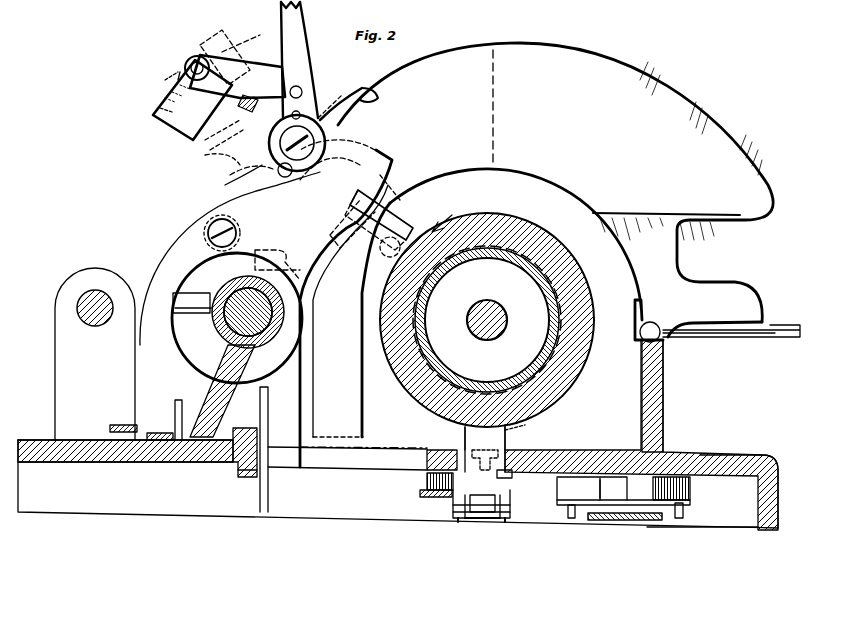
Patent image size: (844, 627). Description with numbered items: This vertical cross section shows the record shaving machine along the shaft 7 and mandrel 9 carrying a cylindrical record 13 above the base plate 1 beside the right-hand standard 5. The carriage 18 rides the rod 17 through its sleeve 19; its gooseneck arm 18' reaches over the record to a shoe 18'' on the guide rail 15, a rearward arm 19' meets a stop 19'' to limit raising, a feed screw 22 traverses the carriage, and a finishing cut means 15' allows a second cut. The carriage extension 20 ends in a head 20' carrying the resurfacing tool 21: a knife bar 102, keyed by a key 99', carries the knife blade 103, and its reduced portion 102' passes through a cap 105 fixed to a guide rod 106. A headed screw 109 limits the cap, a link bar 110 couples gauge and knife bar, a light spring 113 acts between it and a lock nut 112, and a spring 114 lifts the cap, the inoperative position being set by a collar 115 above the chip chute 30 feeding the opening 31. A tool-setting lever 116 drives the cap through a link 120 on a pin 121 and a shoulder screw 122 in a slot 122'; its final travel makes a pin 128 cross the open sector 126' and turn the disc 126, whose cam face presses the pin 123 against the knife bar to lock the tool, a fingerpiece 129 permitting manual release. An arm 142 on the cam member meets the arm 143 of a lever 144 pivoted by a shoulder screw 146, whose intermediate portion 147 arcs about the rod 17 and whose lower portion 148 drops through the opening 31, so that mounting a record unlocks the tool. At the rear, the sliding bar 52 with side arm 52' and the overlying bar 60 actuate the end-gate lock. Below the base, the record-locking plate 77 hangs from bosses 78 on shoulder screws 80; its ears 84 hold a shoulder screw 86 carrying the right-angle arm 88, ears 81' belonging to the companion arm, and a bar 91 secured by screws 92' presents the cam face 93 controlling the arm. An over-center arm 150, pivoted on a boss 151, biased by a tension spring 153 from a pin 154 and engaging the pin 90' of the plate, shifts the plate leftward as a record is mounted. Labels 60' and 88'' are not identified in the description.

The base plate 1 is at (153, 503).
The right-hand standard 5 is at (66, 383).
The shaft 7 is at (508, 322).
The mandrel 9 is at (520, 271).
The cylindrical record 13 is at (510, 212).
The guide rail 15 is at (688, 387).
The finishing cut means 15' is at (731, 316).
The rod 17 is at (270, 312).
The carriage 18 is at (488, 300).
The gooseneck arm 18' is at (555, 181).
The shoe 18'' is at (734, 308).
The sleeve 19 is at (276, 312).
The rearwardly and downwardly extending arm 19' is at (232, 476).
The stop 19'' is at (265, 447).
The forward extension 20 is at (280, 308).
The head 20' is at (205, 161).
The resurfacing tool 21 is at (451, 213).
The feed screw 22 is at (100, 290).
The chip chute 30 is at (418, 228).
The opening 31 is at (430, 452).
The bar 52 is at (167, 459).
The side arm 52' is at (162, 415).
The bar 60 is at (127, 411).
The stop lever 60' is at (177, 365).
The plate 77 is at (430, 490).
The bosses 78 is at (562, 486).
The shoulder screws 80 is at (560, 505).
The turned-down ears 81' is at (501, 558).
The turned down ears 84 is at (512, 515).
The shoulder screw 86 is at (482, 515).
The right angle arm 88 is at (445, 433).
The shaft bore 88'' is at (585, 403).
The pin 90' is at (482, 550).
The bar 91 is at (512, 468).
The screws 92' is at (533, 422).
The left cam face 93 is at (475, 452).
The key 99' is at (236, 172).
The knife bar 102 is at (365, 237).
The upper end portion 102' is at (201, 137).
The knife blade 103 is at (425, 262).
The cap 105 is at (232, 20).
The guide rod 106 is at (378, 152).
The headed screw 109 is at (178, 72).
The link bar 110 is at (160, 125).
The adjustable lock nut 112 is at (162, 100).
The compression spring 113 is at (160, 113).
The compression spring 114 is at (248, 104).
The collar 115 is at (392, 186).
The tool-setting lever 116 is at (304, 50).
The link 120 is at (250, 65).
The pin 121 is at (297, 84).
The shoulder screw 122 is at (178, 59).
The slot 122' is at (249, 36).
The pin 123 is at (278, 170).
The disc 126 is at (284, 143).
The open sector 126' is at (337, 98).
The pin 128 is at (320, 95).
The fingerpiece 129 is at (368, 80).
The arm 142 is at (362, 168).
The arm 143 is at (300, 235).
The lever 144 is at (222, 186).
The shoulder screw 146 is at (212, 222).
The intermediate portion 147 is at (182, 248).
The lower portion 148 is at (270, 482).
The arm 150 is at (572, 518).
The boss 151 is at (640, 486).
The tension spring 153 is at (615, 522).
The pin 154 is at (682, 518).